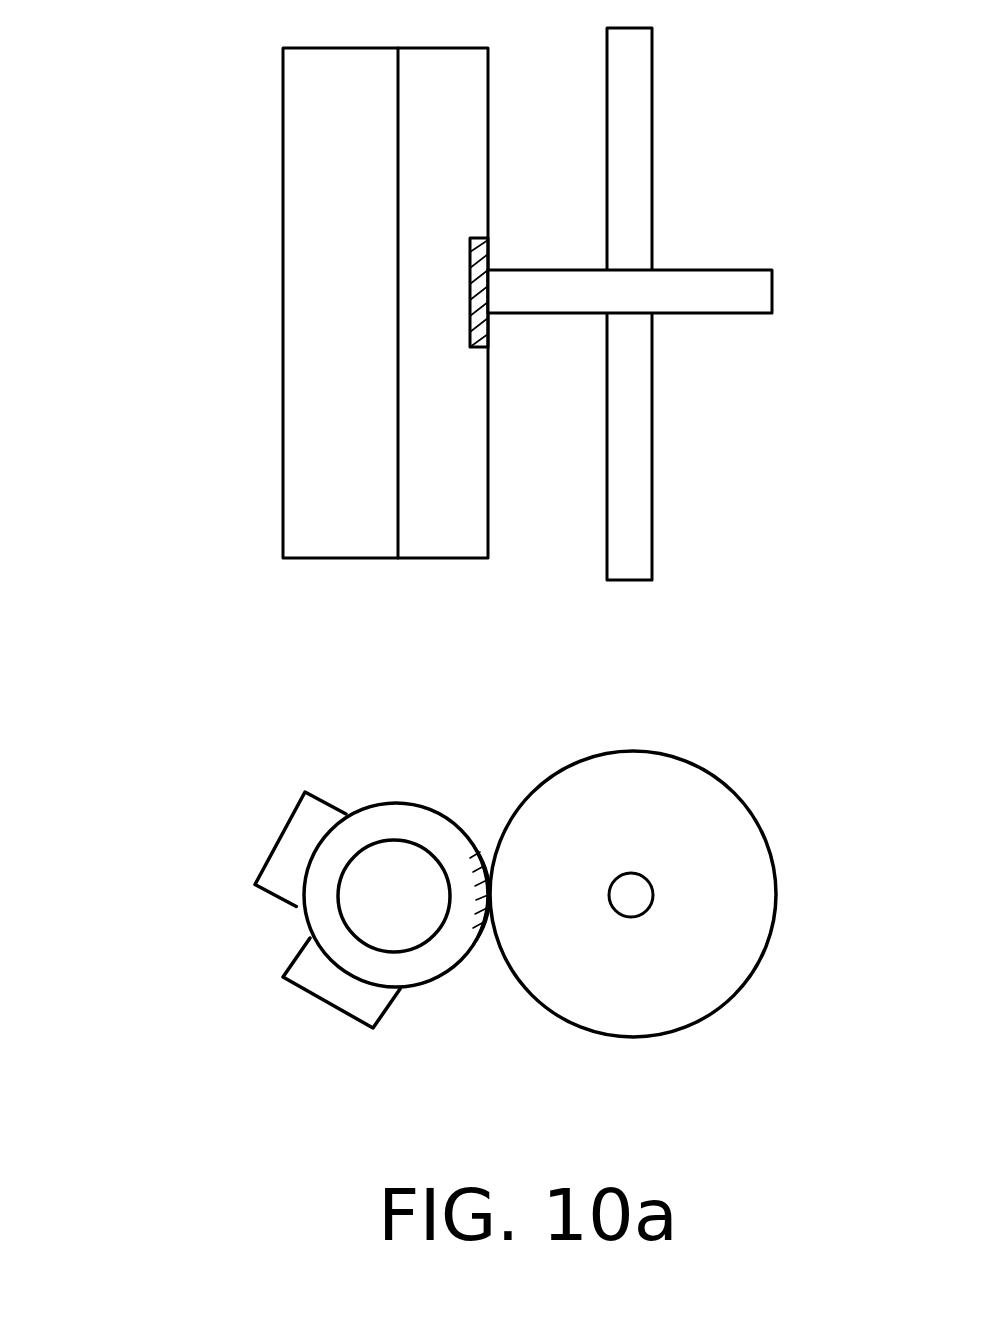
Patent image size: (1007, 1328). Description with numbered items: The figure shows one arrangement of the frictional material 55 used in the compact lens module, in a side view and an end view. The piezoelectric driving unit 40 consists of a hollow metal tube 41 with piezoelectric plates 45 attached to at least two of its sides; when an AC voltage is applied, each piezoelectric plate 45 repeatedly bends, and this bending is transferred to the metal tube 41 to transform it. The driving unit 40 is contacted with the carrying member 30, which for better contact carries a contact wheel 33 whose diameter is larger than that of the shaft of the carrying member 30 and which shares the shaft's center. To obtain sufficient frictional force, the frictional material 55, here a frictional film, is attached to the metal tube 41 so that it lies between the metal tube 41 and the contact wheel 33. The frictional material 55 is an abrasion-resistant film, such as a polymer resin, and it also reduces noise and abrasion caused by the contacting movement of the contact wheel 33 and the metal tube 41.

The carrying member 30 is at (633, 387).
The contact wheel 33 is at (707, 277).
The piezoelectric driving unit 40 is at (273, 555).
The hollow metal tube 41 is at (428, 530).
The piezoelectric plate 45 is at (317, 530).
The frictional material 55 is at (470, 307).